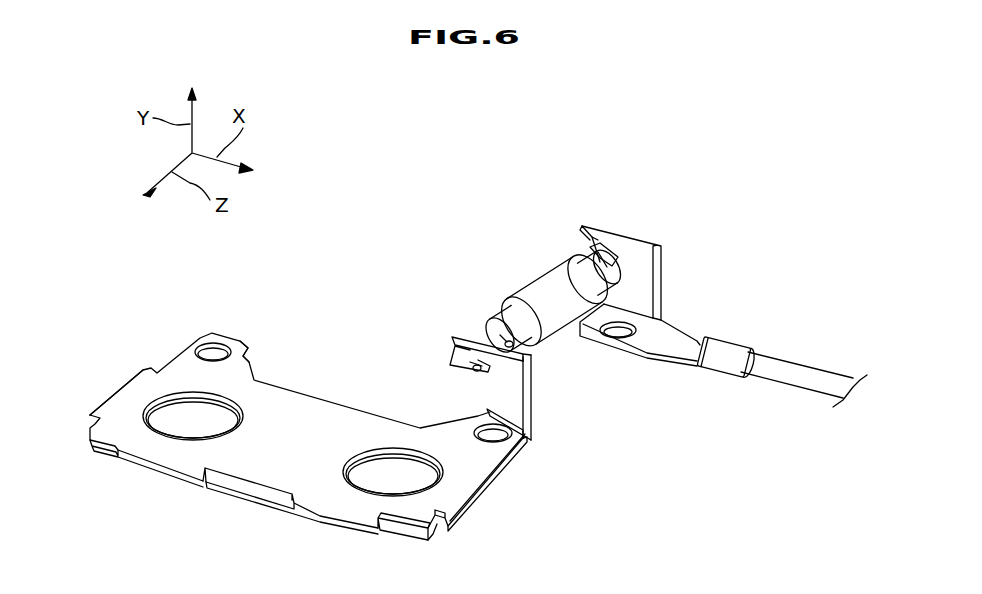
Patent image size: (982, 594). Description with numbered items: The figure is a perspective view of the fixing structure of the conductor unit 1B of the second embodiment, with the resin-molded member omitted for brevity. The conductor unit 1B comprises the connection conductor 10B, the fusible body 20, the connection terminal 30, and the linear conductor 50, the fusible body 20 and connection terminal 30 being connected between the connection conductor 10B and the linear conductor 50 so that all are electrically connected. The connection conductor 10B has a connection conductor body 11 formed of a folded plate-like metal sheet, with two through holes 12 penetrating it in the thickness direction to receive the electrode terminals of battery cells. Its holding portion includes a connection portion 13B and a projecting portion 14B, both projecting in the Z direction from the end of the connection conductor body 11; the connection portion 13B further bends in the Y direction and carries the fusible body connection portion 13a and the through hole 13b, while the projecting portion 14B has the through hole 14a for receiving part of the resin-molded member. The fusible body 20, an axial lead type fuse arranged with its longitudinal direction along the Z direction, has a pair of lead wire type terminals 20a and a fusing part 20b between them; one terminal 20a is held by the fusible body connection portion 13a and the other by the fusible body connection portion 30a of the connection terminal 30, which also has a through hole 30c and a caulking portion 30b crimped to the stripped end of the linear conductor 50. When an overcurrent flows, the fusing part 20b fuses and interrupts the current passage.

The conductor unit 1B is at (498, 133).
The connection conductor 10B is at (483, 512).
The connection conductor body 11 is at (287, 462).
The through hole 12 is at (172, 436).
The fusible body connection portion 13a is at (453, 353).
The through hole 13b is at (489, 430).
The connection portion 13B is at (513, 437).
The through hole 14a is at (205, 348).
The projecting portion 14B is at (240, 344).
The fusible body 20 is at (390, 287).
The lead wire type terminal 20a is at (587, 262).
The fusing part 20b is at (548, 302).
The connection terminal 30 is at (655, 238).
The fusible body connection portion 30a is at (592, 232).
The caulking portion 30b is at (728, 346).
The through hole 30c is at (614, 338).
The linear conductor 50 is at (807, 367).